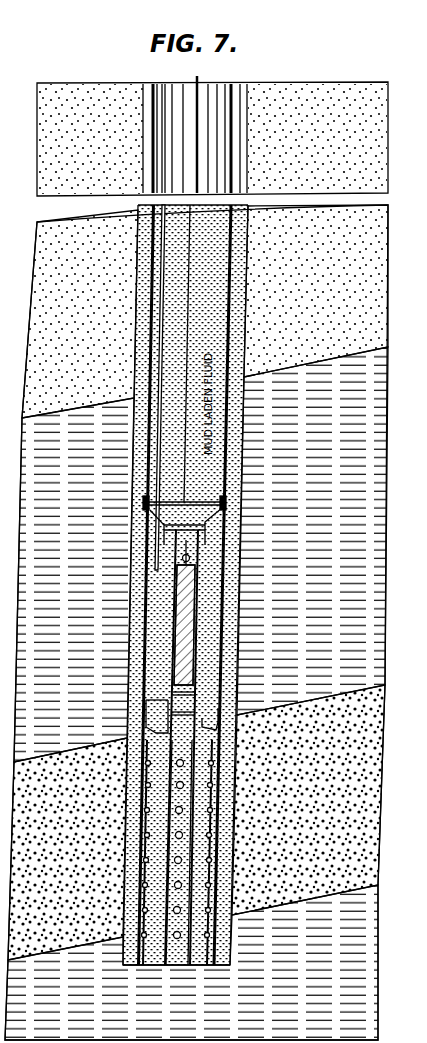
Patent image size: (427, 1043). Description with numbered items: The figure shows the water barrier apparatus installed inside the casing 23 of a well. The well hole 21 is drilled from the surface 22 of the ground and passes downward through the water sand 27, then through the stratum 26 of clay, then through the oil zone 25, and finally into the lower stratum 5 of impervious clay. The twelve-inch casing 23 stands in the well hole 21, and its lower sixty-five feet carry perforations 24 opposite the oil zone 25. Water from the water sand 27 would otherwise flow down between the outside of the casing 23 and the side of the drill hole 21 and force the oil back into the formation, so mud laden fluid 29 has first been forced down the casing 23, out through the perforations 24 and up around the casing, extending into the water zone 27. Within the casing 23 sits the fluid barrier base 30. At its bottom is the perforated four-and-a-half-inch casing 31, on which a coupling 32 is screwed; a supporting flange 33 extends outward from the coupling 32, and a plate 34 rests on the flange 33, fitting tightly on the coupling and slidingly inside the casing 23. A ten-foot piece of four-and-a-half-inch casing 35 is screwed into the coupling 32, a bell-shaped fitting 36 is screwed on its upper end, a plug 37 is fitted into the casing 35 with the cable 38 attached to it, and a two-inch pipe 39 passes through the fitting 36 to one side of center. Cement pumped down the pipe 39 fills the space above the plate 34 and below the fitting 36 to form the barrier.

The well hole 21 is at (246, 92).
The surface of the ground 22 is at (322, 87).
The water sand 27 is at (381, 152).
The mud laden fluid 29 is at (233, 422).
The 2 inch pipe 39 is at (156, 456).
The cable 38 is at (185, 491).
The bell-shaped fitting 36 is at (227, 509).
The stratum of clay 26 is at (369, 487).
The fluid barrier base 30 is at (215, 600).
The 4½ inch casing 35 is at (196, 621).
The plug 37 is at (190, 646).
The casing 23 is at (198, 692).
The coupling 32 is at (209, 723).
The supporting flange 33 is at (214, 728).
The plate 34 is at (149, 722).
The perforated 4½ inch casing 31 is at (167, 752).
The oil zone 25 is at (364, 767).
The perforations 24 is at (140, 941).
The stratum of impervious clay 5 is at (343, 1004).